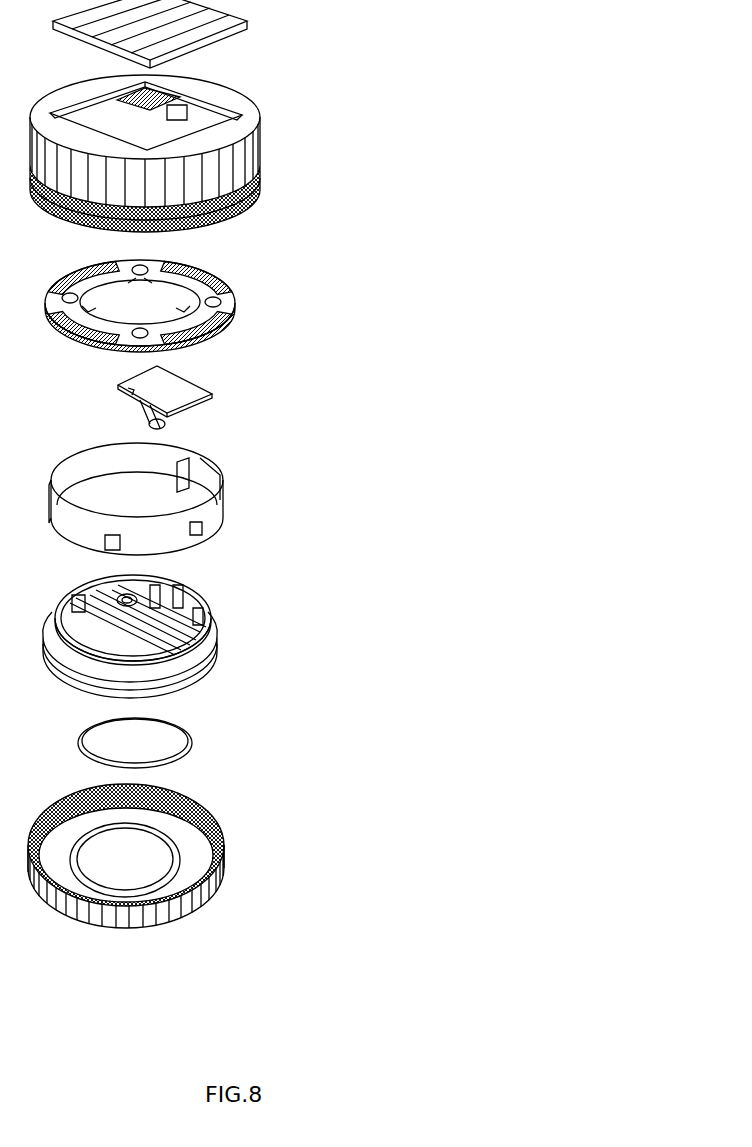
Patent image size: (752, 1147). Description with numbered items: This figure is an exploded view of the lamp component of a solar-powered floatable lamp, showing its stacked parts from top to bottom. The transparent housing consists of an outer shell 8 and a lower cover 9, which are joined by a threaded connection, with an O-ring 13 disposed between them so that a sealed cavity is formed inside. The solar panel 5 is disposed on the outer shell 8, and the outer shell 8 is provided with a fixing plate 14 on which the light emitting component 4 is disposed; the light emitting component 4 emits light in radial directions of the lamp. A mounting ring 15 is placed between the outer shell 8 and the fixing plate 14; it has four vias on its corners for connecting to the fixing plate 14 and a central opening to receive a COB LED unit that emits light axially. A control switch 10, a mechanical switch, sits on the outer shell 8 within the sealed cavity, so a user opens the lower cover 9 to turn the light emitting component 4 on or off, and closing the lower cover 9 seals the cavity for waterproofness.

The solar panel 5 is at (265, 27).
The outer shell 8 is at (277, 128).
The mounting ring 15 is at (253, 295).
The control switch 10 is at (233, 398).
The light emitting component 4 is at (225, 510).
The fixing plate 14 is at (225, 635).
The O-ring 13 is at (215, 748).
The lower cover 9 is at (245, 872).